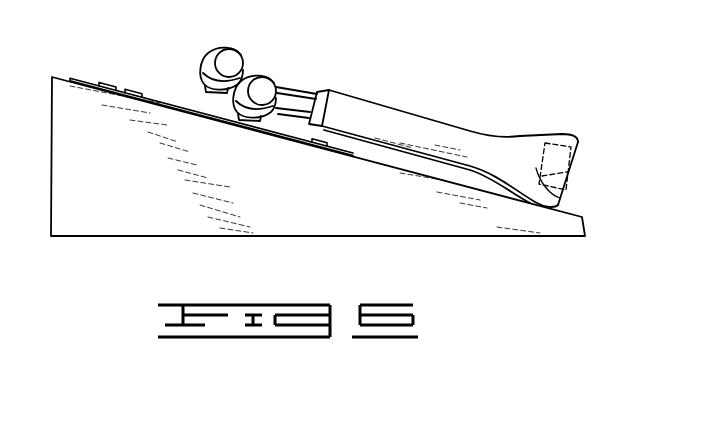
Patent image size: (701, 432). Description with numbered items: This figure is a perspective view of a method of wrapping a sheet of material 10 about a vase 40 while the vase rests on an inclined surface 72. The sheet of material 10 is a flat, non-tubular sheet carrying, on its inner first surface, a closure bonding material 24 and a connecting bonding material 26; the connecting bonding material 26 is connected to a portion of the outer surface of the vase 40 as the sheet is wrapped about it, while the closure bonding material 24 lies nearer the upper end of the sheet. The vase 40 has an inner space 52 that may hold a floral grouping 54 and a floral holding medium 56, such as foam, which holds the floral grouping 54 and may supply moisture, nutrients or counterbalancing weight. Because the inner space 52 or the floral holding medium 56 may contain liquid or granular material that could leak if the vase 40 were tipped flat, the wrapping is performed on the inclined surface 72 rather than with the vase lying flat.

The sheet of material 10 is at (180, 110).
The closure bonding material 24 is at (135, 90).
The connecting bonding material 26 is at (323, 138).
The vase 40 is at (432, 122).
The inner space 52 is at (488, 155).
The floral grouping 54 is at (293, 87).
The floral holding medium 56 is at (552, 142).
The inclined surface 72 is at (75, 80).